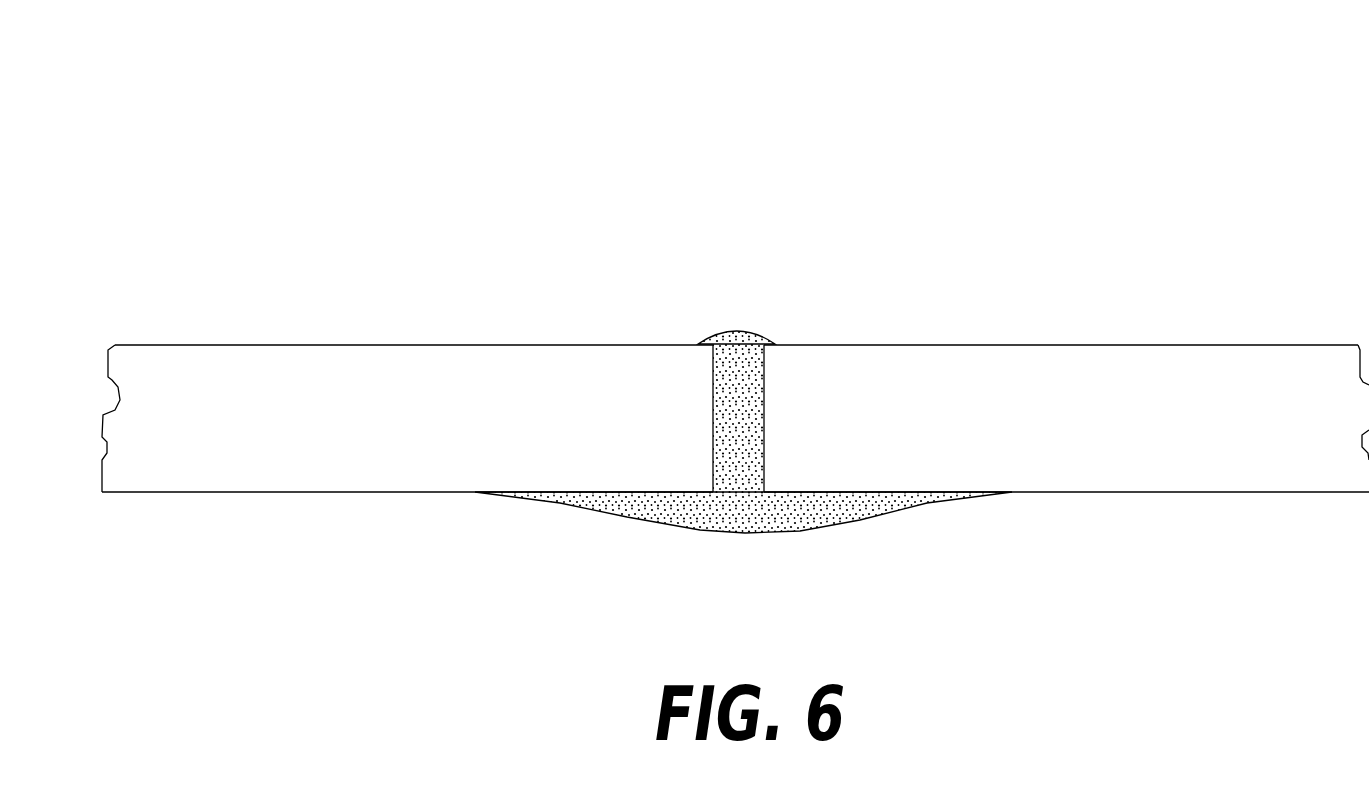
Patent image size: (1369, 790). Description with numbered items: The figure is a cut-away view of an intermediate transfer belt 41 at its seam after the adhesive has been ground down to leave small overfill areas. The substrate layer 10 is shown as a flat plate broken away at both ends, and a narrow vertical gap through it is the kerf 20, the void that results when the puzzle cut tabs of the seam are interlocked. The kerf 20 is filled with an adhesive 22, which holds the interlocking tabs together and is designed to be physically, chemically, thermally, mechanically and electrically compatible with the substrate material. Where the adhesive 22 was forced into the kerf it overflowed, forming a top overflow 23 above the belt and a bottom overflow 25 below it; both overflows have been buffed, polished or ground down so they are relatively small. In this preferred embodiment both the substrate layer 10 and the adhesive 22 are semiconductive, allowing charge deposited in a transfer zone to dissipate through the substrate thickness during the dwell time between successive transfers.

The substrate layer 10 is at (1163, 357).
The kerf 20 is at (768, 357).
The adhesive 22 is at (735, 410).
The top overflow 23 is at (725, 332).
The bottom overflow 25 is at (668, 527).
The intermediate transfer belt 41 is at (1082, 170).